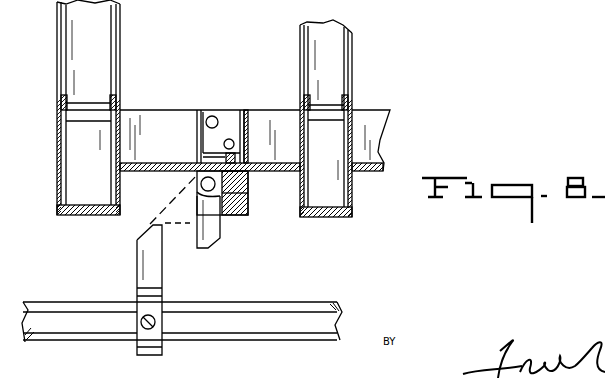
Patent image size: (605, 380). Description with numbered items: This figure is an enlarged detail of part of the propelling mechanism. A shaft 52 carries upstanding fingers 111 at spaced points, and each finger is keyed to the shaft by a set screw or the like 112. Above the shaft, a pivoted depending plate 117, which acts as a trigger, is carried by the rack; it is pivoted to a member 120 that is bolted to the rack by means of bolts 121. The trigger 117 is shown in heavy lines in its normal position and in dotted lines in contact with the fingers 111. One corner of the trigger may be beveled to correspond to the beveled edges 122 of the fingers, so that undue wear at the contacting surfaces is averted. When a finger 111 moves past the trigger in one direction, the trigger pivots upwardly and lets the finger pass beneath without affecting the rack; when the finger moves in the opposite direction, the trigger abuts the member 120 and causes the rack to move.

The shaft 52 is at (87, 302).
The upstanding fingers 111 is at (154, 265).
The set screws 112 is at (155, 322).
The pivoted depending plate 117 is at (209, 230).
The member 120 is at (248, 201).
The bolts 121 is at (220, 157).
The beveled edges 122 is at (156, 226).